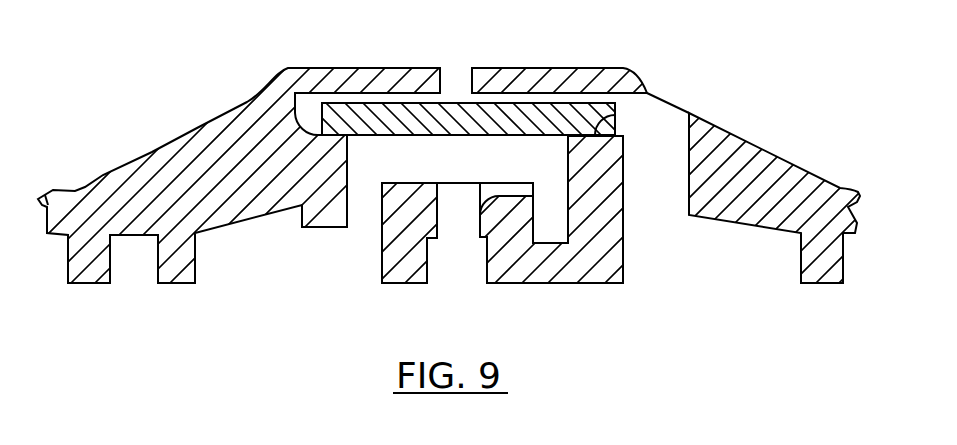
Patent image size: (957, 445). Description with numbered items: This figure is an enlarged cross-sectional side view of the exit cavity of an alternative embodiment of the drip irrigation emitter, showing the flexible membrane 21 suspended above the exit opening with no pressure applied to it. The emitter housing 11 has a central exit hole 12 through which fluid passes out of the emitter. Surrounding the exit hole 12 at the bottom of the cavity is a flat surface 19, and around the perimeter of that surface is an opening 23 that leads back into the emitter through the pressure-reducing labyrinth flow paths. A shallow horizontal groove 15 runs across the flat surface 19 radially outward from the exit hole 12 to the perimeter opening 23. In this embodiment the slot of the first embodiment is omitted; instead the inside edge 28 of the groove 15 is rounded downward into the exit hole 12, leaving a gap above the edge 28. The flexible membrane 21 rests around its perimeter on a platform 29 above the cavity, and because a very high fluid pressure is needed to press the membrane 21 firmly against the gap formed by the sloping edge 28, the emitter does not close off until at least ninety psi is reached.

The housing 11 is at (568, 268).
The central exit hole 12 is at (453, 262).
The shallow horizontal groove 15 is at (520, 188).
The flat surface 19 is at (408, 182).
The flexible membrane 21 is at (442, 113).
The opening 23 is at (550, 208).
The inside edge of groove 28 is at (493, 197).
The platform 29 is at (615, 117).